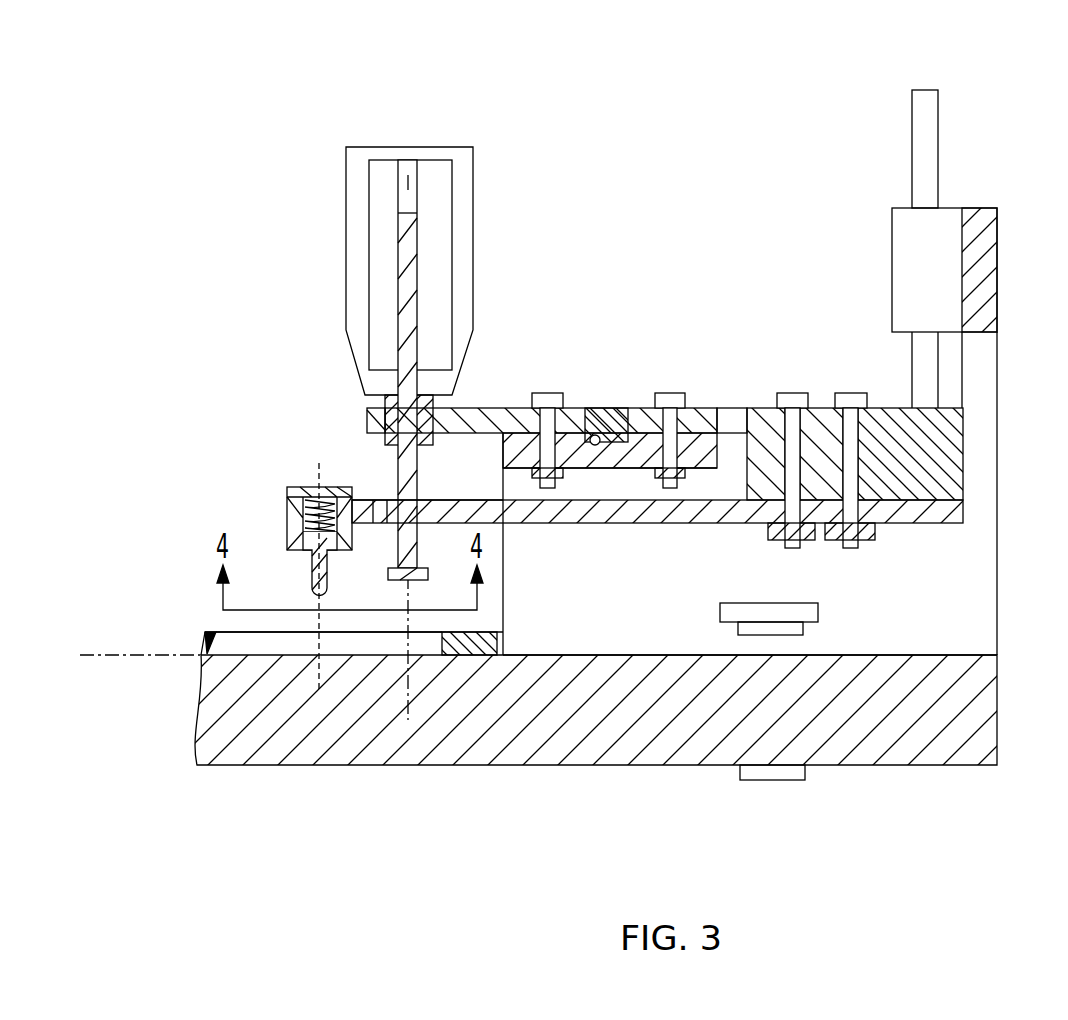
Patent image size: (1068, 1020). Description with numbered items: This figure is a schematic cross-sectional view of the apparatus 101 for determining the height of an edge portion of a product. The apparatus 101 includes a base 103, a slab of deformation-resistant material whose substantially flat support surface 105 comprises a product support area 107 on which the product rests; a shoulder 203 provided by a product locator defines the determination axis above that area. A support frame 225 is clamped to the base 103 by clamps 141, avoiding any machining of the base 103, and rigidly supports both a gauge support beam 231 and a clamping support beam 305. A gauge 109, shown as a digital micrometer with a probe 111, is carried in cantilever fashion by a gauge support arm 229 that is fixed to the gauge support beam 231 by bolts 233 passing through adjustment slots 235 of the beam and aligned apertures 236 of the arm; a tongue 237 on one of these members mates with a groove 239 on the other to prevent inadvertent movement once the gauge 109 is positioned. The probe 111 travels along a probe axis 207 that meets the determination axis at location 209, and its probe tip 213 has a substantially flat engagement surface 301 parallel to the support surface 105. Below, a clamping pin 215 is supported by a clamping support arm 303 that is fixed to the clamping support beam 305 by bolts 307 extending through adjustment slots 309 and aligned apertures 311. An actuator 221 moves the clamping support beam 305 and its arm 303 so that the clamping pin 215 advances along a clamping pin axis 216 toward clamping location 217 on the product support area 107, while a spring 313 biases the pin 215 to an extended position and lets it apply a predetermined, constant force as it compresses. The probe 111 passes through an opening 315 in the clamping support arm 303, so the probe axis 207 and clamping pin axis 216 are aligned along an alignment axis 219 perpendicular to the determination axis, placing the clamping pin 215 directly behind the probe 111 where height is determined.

The apparatus 101 is at (742, 152).
The base 103 is at (923, 791).
The support surface 105 is at (636, 652).
The product support area 107 is at (206, 640).
The gauge 109 is at (473, 232).
The probe 111 is at (385, 446).
The clamps 141 is at (769, 783).
The shoulder 203 is at (407, 640).
The probe axis 207 is at (403, 598).
The location 209 is at (413, 655).
The probe tip 213 is at (388, 568).
The clamping pin 215 is at (312, 578).
The clamping pin axis 216 is at (316, 475).
The clamping location 217 is at (318, 652).
The alignment axis 219 is at (113, 665).
The actuator 221 is at (866, 233).
The support frame 225 is at (988, 180).
The gauge support arm 229 is at (512, 408).
The gauge support beam 231 is at (626, 468).
The bolts 233 is at (548, 405).
The adjustment slots 235 is at (543, 452).
The apertures 236 is at (667, 400).
The tongue 237 is at (585, 420).
The groove 239 is at (597, 446).
The engagement surface 301 is at (417, 584).
The clamping support arm 303 is at (705, 525).
The clamping support beam 305 is at (945, 468).
The bolts 307 is at (777, 412).
The adjustment slots 309 is at (840, 482).
The apertures 311 is at (801, 541).
The spring 313 is at (287, 497).
The opening 315 is at (429, 499).